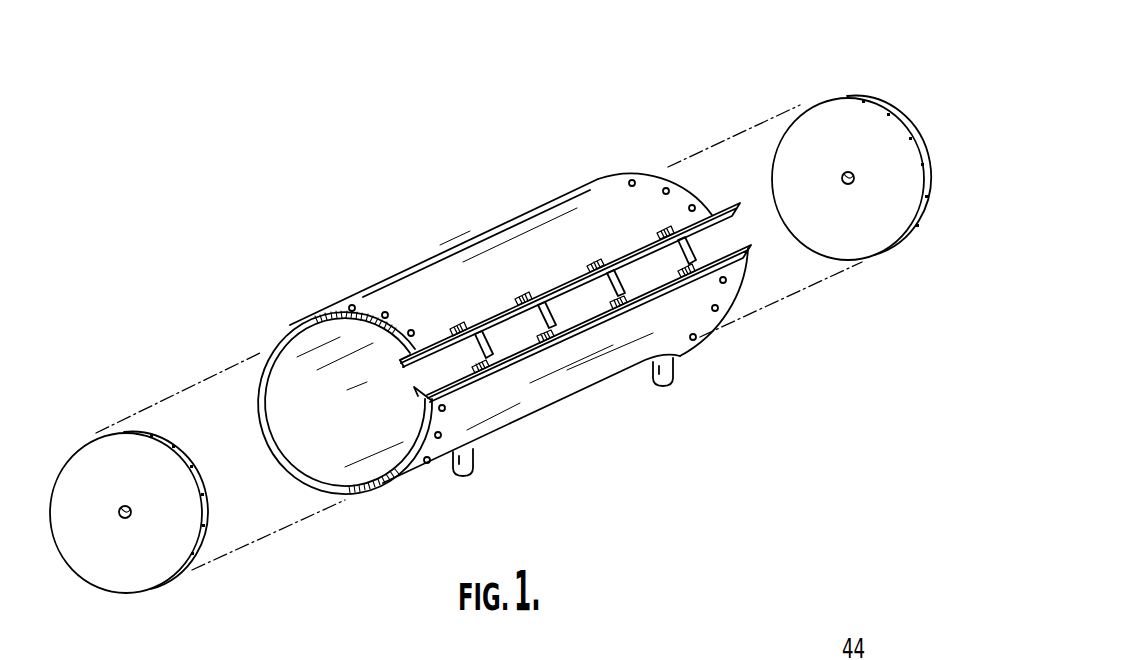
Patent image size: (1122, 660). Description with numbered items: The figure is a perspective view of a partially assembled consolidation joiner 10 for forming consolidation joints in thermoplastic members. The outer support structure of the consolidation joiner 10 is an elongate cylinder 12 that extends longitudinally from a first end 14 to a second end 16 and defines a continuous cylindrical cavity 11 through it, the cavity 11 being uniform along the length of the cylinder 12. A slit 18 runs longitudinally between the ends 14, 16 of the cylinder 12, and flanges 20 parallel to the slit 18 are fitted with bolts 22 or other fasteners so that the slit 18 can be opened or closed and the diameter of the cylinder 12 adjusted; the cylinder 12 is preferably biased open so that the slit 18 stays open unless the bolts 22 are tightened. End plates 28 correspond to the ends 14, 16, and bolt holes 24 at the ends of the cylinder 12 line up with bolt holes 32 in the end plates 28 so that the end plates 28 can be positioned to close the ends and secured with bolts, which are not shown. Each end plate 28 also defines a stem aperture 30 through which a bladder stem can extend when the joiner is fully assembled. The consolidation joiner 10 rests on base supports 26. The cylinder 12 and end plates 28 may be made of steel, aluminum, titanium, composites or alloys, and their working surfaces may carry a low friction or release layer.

The consolidation joiner 10 is at (313, 229).
The cavity 11 is at (349, 442).
The elongate cylinder 12 is at (437, 262).
The first end 14 is at (257, 395).
The second end 16 is at (733, 288).
The slit 18 is at (734, 233).
The flanges 20 is at (498, 318).
The bolts 22 is at (547, 343).
The bolt holes 24 is at (348, 305).
The base supports 26 is at (475, 460).
The end plates 28 is at (71, 490).
The stem apertures 30 is at (122, 520).
The bolt holes 32 is at (198, 420).